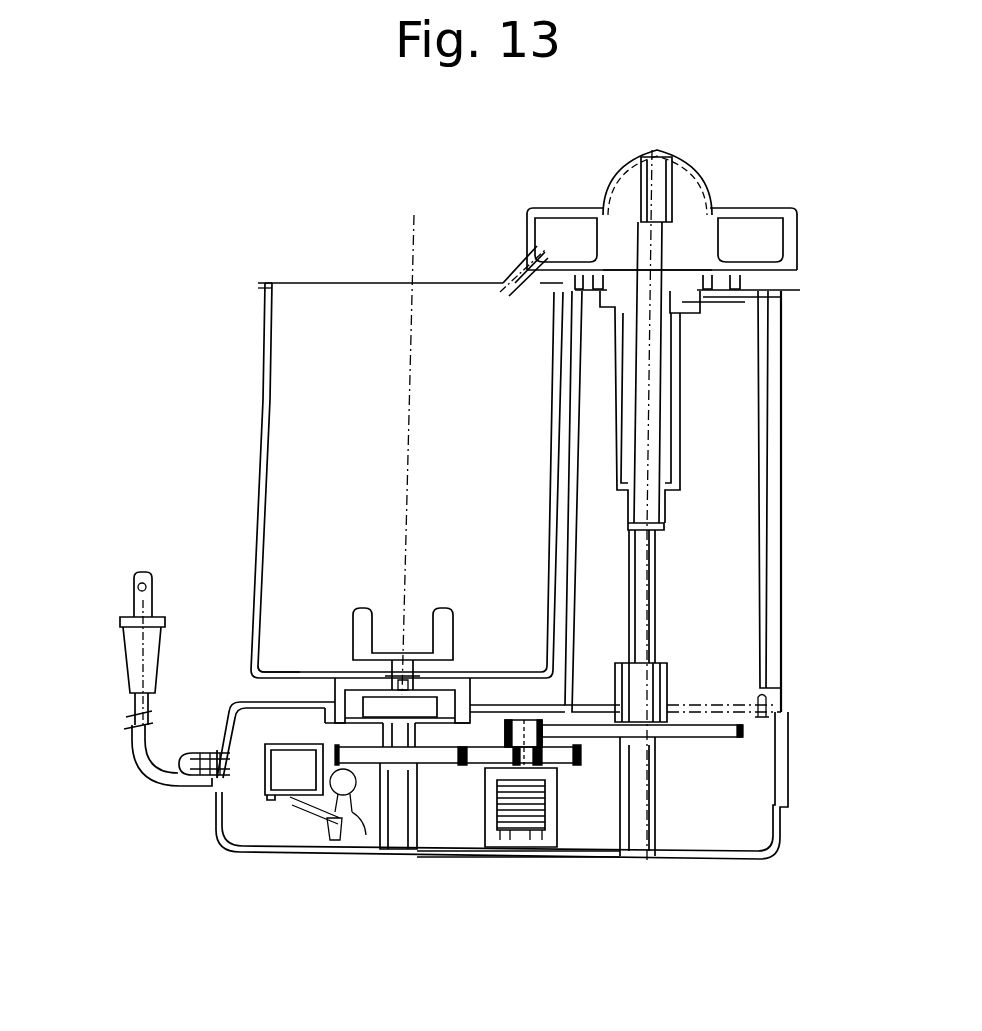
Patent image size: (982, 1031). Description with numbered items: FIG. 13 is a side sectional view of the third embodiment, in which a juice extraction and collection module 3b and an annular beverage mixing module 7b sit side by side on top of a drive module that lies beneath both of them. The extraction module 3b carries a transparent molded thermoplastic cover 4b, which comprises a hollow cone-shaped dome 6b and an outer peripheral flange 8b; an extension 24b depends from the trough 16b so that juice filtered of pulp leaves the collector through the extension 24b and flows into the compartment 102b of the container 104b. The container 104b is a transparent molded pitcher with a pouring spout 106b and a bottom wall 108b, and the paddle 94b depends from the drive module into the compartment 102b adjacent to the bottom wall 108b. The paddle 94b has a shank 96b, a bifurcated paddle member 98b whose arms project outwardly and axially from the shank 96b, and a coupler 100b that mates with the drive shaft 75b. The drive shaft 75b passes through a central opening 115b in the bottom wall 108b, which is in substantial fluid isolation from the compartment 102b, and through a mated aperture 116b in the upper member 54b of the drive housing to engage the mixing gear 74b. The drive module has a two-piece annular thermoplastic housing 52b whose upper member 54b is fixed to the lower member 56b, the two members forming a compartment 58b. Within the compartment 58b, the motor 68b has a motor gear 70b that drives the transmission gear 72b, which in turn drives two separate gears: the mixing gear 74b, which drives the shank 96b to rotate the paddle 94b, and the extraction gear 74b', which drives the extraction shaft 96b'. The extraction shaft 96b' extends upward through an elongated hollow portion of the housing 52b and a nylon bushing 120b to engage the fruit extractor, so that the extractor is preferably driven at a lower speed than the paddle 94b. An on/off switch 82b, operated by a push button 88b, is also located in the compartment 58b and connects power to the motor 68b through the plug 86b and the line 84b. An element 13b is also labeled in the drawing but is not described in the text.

The juice extraction and collection module 3b is at (703, 128).
The cover 4b is at (697, 178).
The hollow cone-shaped dome 6b is at (632, 162).
The mixing module 7b is at (196, 435).
The outer peripheral flange 8b is at (575, 248).
The right tray 13b is at (755, 210).
The trough 16b is at (790, 268).
The extension 24b is at (492, 271).
The housing 52b is at (782, 748).
The upper member 54b is at (760, 743).
The lower member 56b is at (780, 840).
The compartment 58b is at (593, 790).
The motor 68b is at (517, 827).
The motor gear 70b is at (512, 753).
The transmission gear 72b is at (565, 763).
The mixing gear 74b is at (451, 832).
The extraction gear 74b' is at (720, 768).
The drive shaft 75b is at (393, 733).
The on/off switch 82b is at (262, 778).
The line 84b is at (128, 748).
The plug 86b is at (148, 635).
The push button 88b is at (188, 775).
The paddle 94b is at (477, 626).
The shank 96b is at (349, 649).
The extraction shaft 96b' is at (753, 505).
The bifurcated paddle member 98b is at (357, 612).
The coupler 100b is at (413, 686).
The compartment 102b is at (303, 326).
The container 104b is at (262, 375).
The pouring spout 106b is at (260, 286).
The bottom wall 108b is at (300, 672).
The central opening 115b is at (410, 672).
The aperture 116b is at (430, 717).
The nylon bushing 120b is at (745, 302).